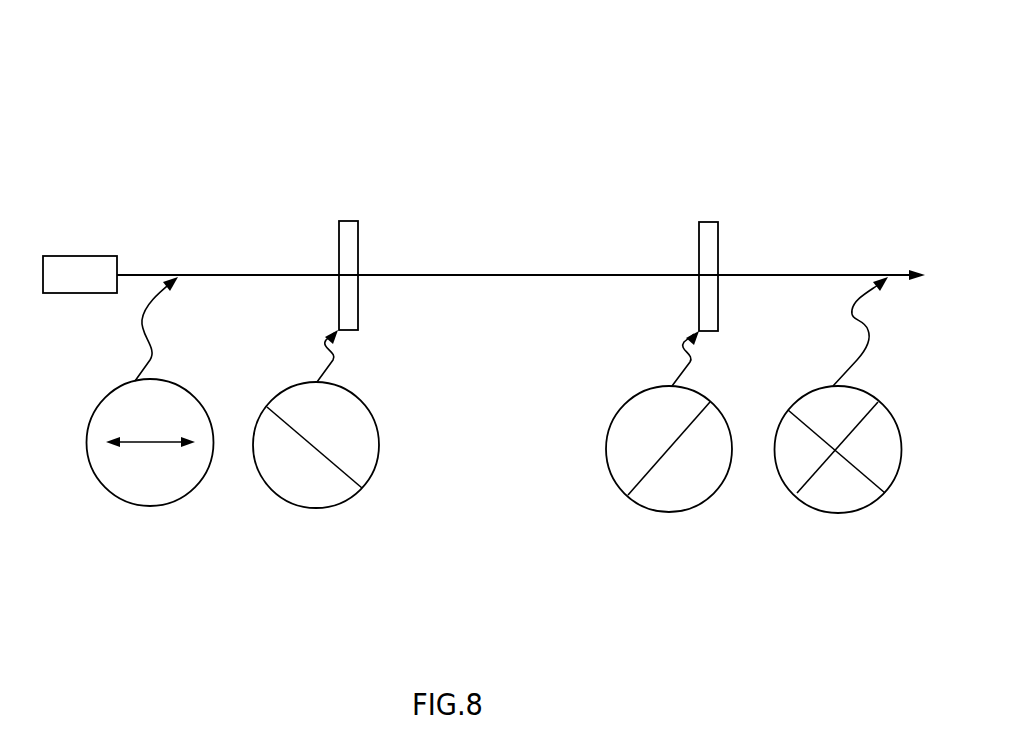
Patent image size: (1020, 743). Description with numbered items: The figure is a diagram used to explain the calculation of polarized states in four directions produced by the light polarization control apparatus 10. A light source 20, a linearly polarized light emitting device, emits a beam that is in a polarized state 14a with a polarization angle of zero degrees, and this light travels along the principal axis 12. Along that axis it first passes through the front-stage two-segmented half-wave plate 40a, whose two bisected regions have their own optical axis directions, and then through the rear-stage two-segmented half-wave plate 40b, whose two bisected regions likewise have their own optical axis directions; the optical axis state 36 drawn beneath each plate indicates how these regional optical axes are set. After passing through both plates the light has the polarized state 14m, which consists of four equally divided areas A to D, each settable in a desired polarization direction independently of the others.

The light polarization control apparatus 10 is at (491, 107).
The principal axis 12 is at (220, 275).
The light source 20 is at (90, 256).
The front-stage two-segmented half-wave plate 40a is at (355, 222).
The rear-stage two-segmented half-wave plate 40b is at (715, 222).
The polarized state 14a is at (148, 506).
The optical axis state 36 is at (326, 508).
The polarized state 14m is at (847, 513).